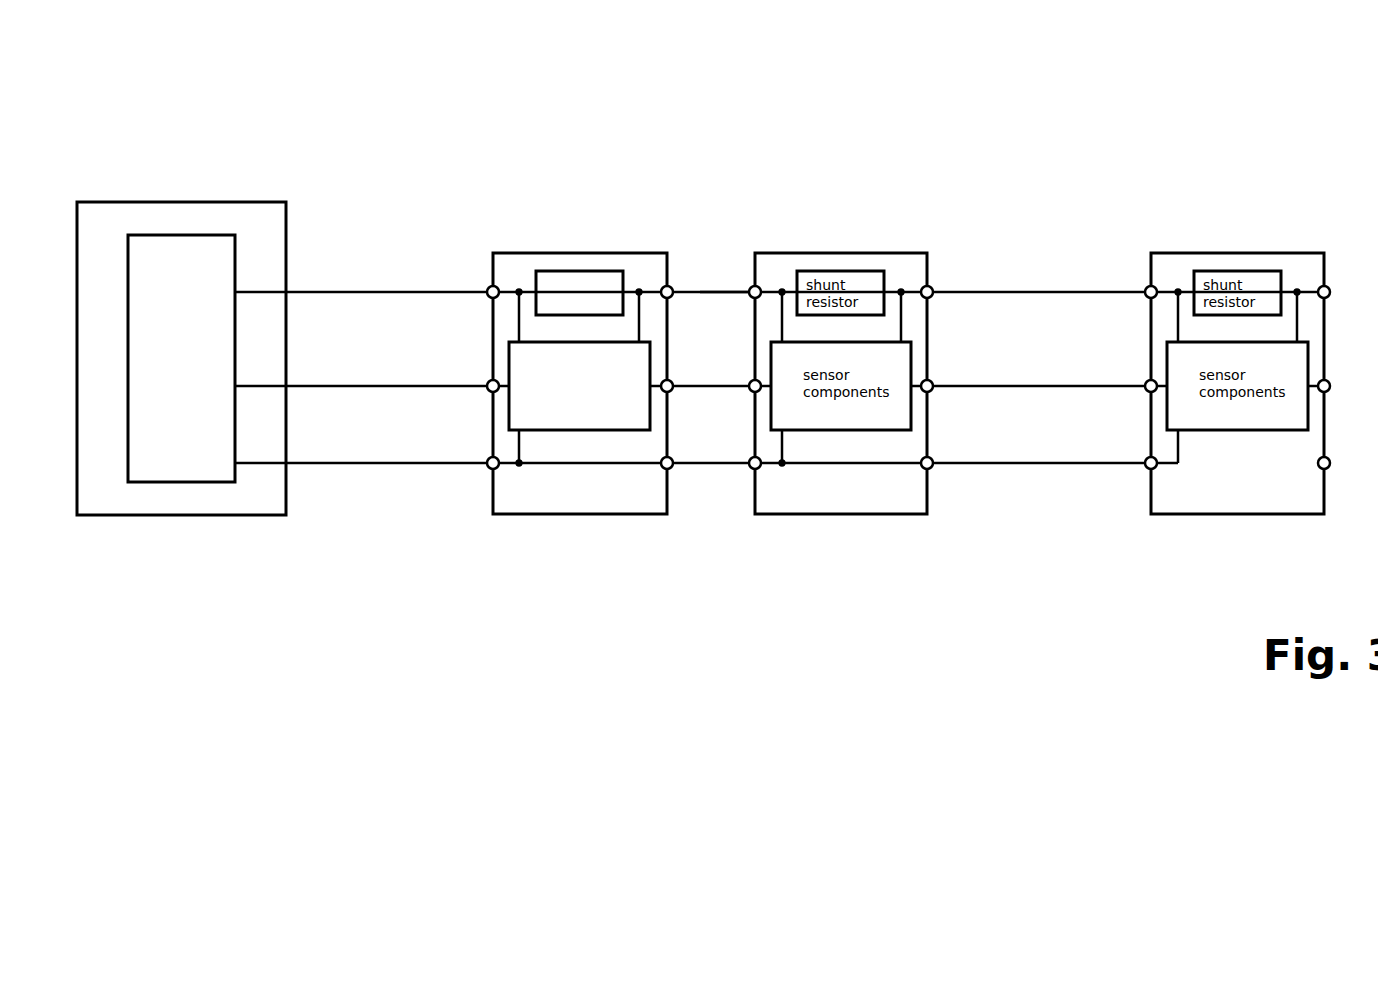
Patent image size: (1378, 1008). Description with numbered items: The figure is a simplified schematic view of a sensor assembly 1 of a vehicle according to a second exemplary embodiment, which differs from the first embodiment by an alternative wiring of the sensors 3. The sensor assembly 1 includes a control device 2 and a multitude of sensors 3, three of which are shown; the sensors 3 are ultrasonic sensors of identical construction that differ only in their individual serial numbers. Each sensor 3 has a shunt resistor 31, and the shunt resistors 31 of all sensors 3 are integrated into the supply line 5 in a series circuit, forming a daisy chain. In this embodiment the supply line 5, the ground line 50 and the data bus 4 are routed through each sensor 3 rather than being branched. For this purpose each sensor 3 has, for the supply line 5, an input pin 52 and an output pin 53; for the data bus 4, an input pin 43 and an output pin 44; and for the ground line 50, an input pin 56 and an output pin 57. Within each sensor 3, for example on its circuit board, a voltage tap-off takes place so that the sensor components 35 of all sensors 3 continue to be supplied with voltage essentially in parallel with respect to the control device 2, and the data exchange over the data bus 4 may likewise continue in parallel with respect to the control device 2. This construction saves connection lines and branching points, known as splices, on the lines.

The sensor assembly 1 is at (328, 110).
The control device 2 is at (181, 202).
The sensor 3 is at (578, 514).
The data bus 4 is at (357, 420).
The supply line 5 is at (360, 292).
The shunt resistor 31 is at (580, 271).
The sensor components 35 is at (612, 430).
The input pin 43 is at (488, 382).
The output pin 44 is at (672, 382).
The ground line 50 is at (404, 463).
The input pin 52 is at (488, 288).
The output pin 53 is at (672, 288).
The input pin 56 is at (488, 458).
The output pin 57 is at (672, 458).